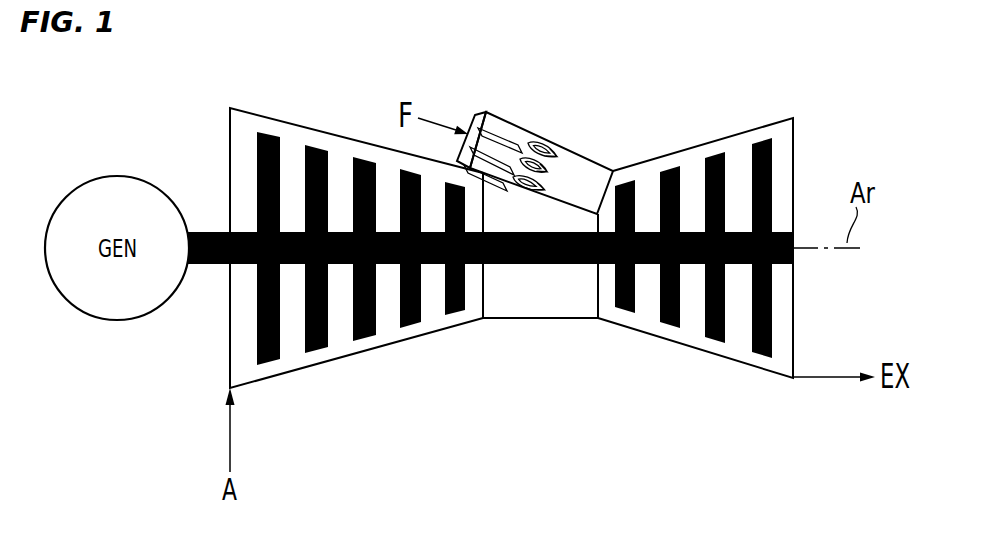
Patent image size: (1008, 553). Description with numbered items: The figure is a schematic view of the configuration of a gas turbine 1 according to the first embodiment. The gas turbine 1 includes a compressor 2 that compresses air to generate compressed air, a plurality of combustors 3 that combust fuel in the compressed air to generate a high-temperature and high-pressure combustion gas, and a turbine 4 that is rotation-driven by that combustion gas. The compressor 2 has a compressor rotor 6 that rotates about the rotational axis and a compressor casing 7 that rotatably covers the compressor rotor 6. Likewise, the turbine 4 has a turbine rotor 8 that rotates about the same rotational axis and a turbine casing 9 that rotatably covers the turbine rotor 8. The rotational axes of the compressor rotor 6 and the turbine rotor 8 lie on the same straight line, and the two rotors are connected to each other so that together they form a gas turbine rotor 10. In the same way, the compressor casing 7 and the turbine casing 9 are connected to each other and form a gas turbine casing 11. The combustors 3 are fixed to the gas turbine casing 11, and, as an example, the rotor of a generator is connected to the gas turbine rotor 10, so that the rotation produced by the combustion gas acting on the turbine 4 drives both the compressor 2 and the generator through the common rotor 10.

The gas turbine 1 is at (655, 114).
The compressor 2 is at (356, 289).
The combustors 3 is at (523, 128).
The turbine 4 is at (695, 293).
The compressor rotor 6 is at (431, 264).
The compressor casing 7 is at (390, 346).
The turbine rotor 8 is at (648, 264).
The turbine casing 9 is at (690, 349).
The gas turbine rotor 10 is at (515, 264).
The gas turbine casing 11 is at (560, 318).